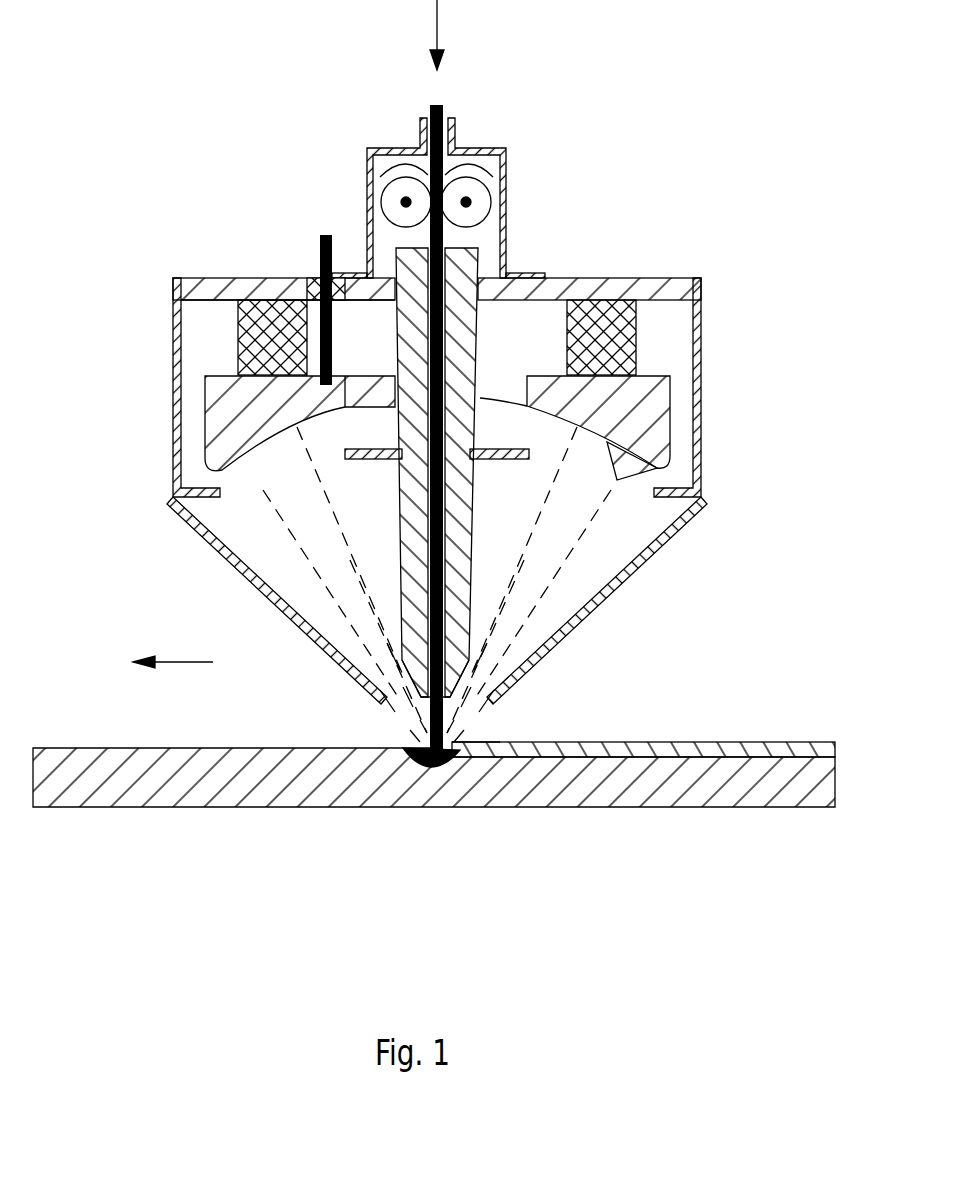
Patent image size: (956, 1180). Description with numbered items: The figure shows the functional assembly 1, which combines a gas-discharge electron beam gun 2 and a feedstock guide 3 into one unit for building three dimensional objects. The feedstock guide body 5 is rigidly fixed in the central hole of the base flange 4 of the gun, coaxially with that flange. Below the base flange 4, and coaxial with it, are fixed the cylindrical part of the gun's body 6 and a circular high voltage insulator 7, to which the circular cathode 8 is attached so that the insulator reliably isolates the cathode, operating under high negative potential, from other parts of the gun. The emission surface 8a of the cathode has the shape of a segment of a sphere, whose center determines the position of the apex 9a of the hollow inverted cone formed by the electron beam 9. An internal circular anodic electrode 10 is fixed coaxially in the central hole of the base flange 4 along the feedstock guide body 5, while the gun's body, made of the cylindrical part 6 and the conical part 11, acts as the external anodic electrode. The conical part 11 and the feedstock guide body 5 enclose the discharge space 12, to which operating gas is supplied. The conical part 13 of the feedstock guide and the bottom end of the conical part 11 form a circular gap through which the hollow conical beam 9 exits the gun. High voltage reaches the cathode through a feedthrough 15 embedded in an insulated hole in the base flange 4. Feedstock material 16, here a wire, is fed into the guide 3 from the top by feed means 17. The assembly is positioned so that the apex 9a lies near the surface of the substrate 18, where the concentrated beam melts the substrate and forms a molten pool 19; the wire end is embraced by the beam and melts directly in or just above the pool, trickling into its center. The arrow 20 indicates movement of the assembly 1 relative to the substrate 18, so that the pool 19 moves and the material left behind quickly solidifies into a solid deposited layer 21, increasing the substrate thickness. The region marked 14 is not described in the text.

The functional assembly 1 is at (385, 214).
The gas-discharge electron beam gun 2 is at (145, 376).
The feedstock guide 3 is at (274, 472).
The base flange 4 is at (232, 244).
The feedstock guide body 5 is at (236, 438).
The cylindrical part of gun's body 6 is at (729, 376).
The circular high voltage insulator 7 is at (521, 337).
The circular cathode 8 is at (505, 418).
The emission surface 8a is at (706, 449).
The electron beam 9 is at (637, 491).
The apex of hollow inverted cone 9a is at (627, 693).
The internal circular anodic electrode 10 is at (551, 553).
The conical part of gun's body 11 is at (486, 600).
The discharge space 12 is at (339, 563).
The conical part of feedstock guide 13 is at (268, 594).
The arc 14 is at (296, 642).
The feedthrough 15 is at (201, 229).
The feedstock material 16 is at (621, 427).
The feed means 17 is at (596, 150).
The substrate 18 is at (643, 829).
The molten pool 19 is at (480, 832).
The arrow 20 is at (140, 691).
The solid deposited layer 21 is at (434, 832).